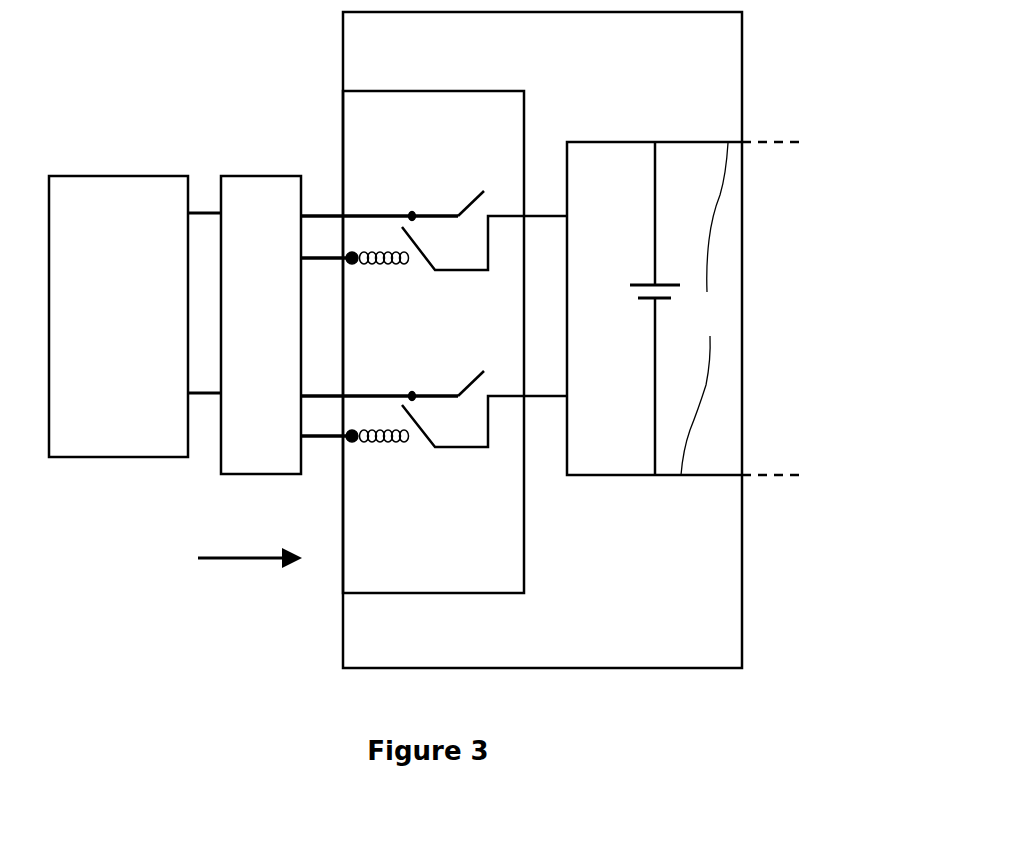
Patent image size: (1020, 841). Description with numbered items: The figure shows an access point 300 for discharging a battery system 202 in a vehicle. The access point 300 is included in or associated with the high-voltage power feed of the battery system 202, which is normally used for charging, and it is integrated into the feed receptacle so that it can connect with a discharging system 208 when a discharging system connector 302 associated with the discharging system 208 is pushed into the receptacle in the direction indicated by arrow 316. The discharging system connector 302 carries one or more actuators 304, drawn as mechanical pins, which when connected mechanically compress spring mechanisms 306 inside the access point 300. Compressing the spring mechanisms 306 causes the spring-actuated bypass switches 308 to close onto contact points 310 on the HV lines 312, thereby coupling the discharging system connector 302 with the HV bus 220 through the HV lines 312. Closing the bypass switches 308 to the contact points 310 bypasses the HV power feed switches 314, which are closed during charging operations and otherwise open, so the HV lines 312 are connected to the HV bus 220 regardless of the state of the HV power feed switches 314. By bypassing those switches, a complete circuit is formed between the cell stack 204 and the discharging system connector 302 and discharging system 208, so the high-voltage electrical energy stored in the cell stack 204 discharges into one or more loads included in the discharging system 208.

The battery system 202 is at (542, 340).
The access point 300 is at (433, 342).
The discharging system 208 is at (118, 316).
The discharging system connector 302 is at (244, 325).
The HV lines 312 is at (313, 214).
The actuators 304 is at (333, 262).
The spring mechanisms 306 is at (384, 267).
The spring-actuated bypass switches 308 is at (424, 273).
The contact points 310 is at (414, 210).
The HV power feed switches 314 is at (466, 200).
The cell stack 204 is at (662, 283).
The HV bus 220 is at (704, 309).
The arrow 316 is at (257, 561).